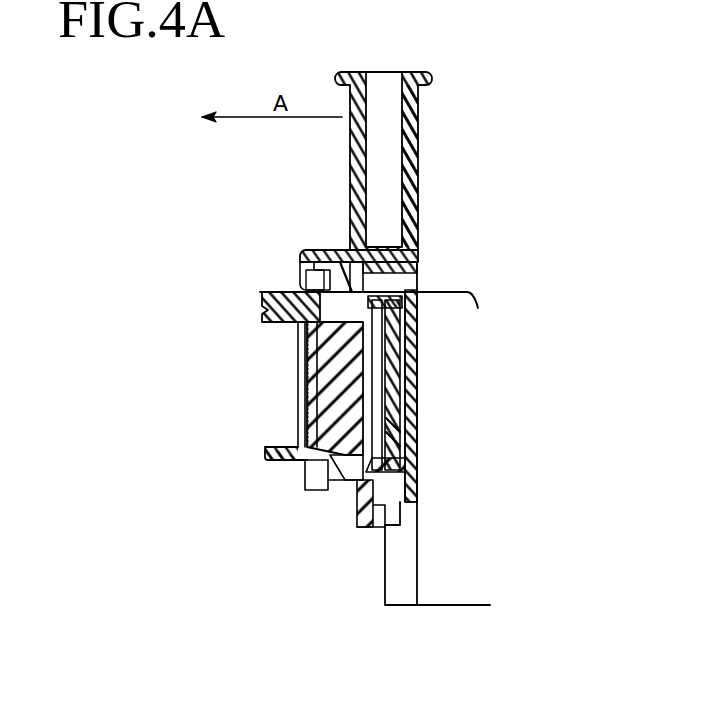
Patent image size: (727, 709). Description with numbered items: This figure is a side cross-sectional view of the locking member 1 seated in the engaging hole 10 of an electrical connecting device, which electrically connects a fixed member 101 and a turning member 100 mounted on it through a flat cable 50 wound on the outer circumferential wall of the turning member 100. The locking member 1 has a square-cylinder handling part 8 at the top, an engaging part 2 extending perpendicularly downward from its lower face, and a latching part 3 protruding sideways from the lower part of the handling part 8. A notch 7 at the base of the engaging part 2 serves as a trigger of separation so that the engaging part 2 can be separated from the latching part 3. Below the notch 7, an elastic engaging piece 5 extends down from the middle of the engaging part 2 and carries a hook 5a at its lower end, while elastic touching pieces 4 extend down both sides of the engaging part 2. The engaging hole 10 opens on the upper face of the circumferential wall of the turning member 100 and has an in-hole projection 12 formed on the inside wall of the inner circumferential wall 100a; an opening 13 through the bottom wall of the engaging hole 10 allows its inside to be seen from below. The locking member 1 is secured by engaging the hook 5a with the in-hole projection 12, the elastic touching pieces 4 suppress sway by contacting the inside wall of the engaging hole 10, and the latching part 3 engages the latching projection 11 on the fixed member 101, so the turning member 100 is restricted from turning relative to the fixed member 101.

The locking member 1 is at (441, 129).
The handling part 8 is at (420, 170).
The latching part 3 is at (331, 250).
The notch 7 is at (418, 300).
The latching projection 11 is at (300, 272).
The engaging part 2 is at (420, 357).
The fixed member 101 is at (262, 292).
The flat cable 50 is at (298, 385).
The engaging hole 10 is at (367, 452).
The opening 13 is at (397, 477).
The elastic engaging piece 5 is at (407, 372).
The elastic touching pieces 4 is at (405, 400).
The in-hole projection 12 is at (412, 428).
The hook 5a is at (415, 462).
The inner circumferential wall 100a is at (420, 490).
The turning member 100 is at (476, 592).